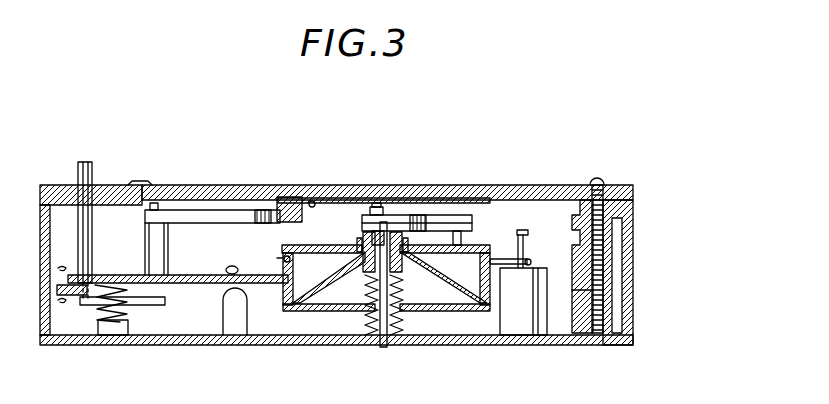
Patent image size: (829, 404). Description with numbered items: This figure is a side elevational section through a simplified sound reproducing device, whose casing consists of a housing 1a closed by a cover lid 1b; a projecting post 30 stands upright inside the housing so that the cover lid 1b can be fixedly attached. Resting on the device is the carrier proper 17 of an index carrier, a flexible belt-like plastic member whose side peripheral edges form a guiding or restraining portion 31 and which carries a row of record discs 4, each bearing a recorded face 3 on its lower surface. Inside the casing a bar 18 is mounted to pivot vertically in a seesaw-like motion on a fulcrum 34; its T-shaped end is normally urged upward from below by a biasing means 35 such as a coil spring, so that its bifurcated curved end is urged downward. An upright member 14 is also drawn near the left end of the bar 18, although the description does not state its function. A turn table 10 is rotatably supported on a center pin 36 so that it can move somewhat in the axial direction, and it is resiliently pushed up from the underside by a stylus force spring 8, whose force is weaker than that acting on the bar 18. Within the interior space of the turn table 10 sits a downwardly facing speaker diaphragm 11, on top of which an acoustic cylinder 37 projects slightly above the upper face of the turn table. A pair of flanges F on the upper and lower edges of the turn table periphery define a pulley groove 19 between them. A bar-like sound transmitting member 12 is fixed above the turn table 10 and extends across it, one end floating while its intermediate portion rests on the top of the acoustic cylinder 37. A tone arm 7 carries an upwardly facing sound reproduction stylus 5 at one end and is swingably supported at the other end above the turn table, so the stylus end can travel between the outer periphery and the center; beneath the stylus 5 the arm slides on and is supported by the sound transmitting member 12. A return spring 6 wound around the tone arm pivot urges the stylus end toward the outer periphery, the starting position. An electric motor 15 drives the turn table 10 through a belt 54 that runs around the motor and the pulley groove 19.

The housing 1a is at (148, 340).
The cover lid 1b is at (170, 185).
The recorded face 3 is at (312, 200).
The record discs 4 is at (290, 200).
The sound reproduction stylus 5 is at (375, 205).
The return spring 6 is at (440, 218).
The tone arm 7 is at (474, 228).
The stylus force spring 8 is at (408, 292).
The turn table 10 is at (618, 250).
The speaker diaphragm 11 is at (462, 283).
The sound transmitting member 12 is at (400, 215).
The push rod 14 is at (83, 162).
The electric motor 15 is at (548, 335).
The carrier proper 17 is at (465, 216).
The bar 18 is at (185, 275).
The pulley groove 19 is at (284, 262).
The projecting post 30 is at (625, 233).
The guiding or restraining portion 31 is at (606, 183).
The fulcrum 34 is at (215, 318).
The biasing means 35 is at (103, 307).
The center pin 36 is at (385, 345).
The acoustic cylinder 37 is at (327, 226).
The belt 54 is at (530, 257).
The flanges F is at (277, 258).